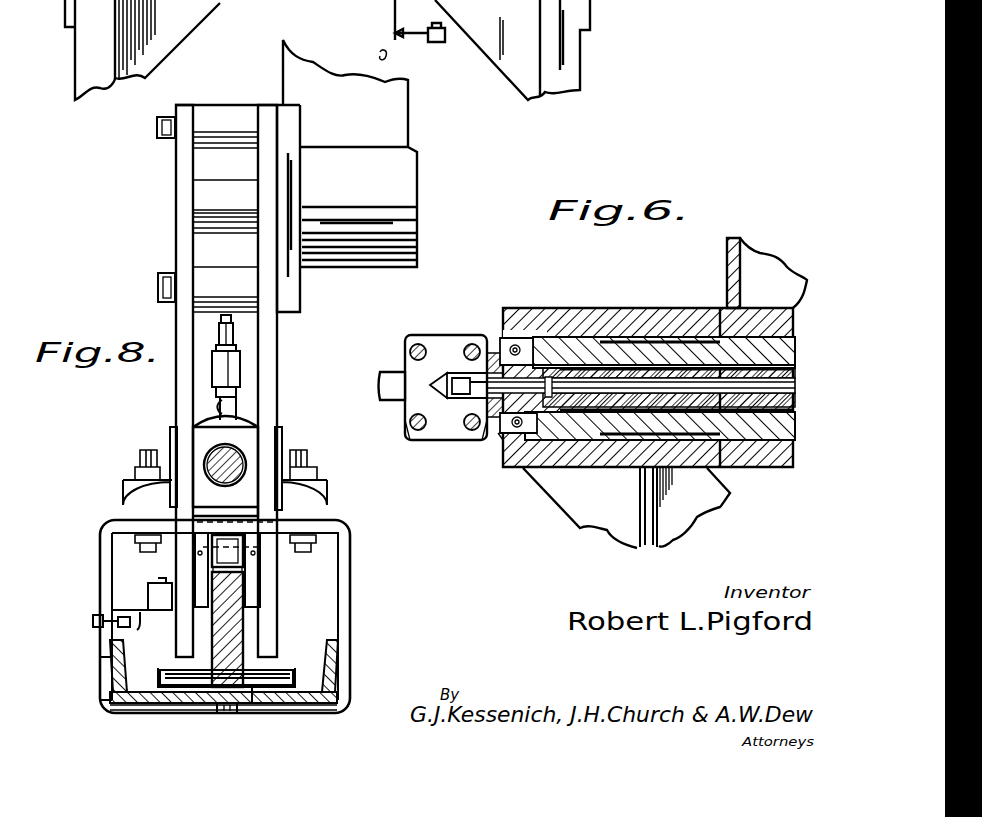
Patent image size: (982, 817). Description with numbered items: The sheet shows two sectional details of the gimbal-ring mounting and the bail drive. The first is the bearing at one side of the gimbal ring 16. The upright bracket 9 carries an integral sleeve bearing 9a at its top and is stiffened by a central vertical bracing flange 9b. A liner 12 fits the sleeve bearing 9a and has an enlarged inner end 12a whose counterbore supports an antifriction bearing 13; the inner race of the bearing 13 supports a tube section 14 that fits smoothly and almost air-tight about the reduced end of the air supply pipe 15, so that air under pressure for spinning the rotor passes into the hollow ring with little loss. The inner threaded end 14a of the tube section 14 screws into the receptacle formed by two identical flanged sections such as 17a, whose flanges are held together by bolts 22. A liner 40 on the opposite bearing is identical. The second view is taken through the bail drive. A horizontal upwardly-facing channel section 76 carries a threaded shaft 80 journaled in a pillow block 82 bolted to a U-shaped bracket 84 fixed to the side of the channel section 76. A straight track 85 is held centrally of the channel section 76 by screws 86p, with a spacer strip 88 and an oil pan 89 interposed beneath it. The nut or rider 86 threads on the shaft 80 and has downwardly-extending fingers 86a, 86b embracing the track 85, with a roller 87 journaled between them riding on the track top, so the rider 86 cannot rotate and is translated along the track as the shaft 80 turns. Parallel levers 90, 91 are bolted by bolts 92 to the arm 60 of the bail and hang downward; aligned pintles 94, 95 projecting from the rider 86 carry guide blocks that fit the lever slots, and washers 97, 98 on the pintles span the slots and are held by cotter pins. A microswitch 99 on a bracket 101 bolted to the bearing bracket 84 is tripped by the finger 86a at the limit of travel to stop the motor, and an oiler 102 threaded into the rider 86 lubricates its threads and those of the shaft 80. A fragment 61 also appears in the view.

In FIG. 6, the upright bracket 9 is at (645, 546).
In FIG. 6, the sleeve bearing 9a is at (611, 318).
In FIG. 6, the vertical bracing flange 9b is at (720, 495).
In FIG. 6, the liner 12 is at (786, 355).
In FIG. 6, the enlarged inner end 12a is at (503, 332).
In FIG. 6, the antifriction bearing 13 is at (506, 436).
In FIG. 6, the tube section 14 is at (556, 406).
In FIG. 6, the inner threaded end 14a is at (450, 378).
In FIG. 6, the air supply pipe 15 is at (793, 385).
In FIG. 6, the gimbal ring 16 is at (403, 427).
In FIG. 6, the flanged section 17a is at (440, 432).
In FIG. 6, the bolts 22 is at (466, 343).
In FIG. 8, the liner 40 is at (218, 190).
In FIG. 8, the arm 60 is at (365, 84).
In FIG. 6, the wall 61 is at (758, 265).
In FIG. 8, the channel section 76 is at (292, 706).
In FIG. 8, the threaded shaft 80 is at (230, 458).
In FIG. 8, the pillow block 82 is at (128, 487).
In FIG. 8, the U-shaped bracket 84 is at (340, 606).
In FIG. 8, the track 85 is at (240, 633).
In FIG. 8, the nut or rider 86 is at (202, 442).
In FIG. 8, the finger 86a is at (200, 572).
In FIG. 8, the finger 86b is at (255, 584).
In FIG. 8, the screws 86p is at (226, 713).
In FIG. 8, the roller 87 is at (229, 538).
In FIG. 8, the spacer strip 88 is at (252, 705).
In FIG. 8, the oil pan 89 is at (280, 680).
In FIG. 8, the lever 90 is at (178, 386).
In FIG. 8, the lever 91 is at (272, 338).
In FIG. 8, the bolts 92 is at (160, 140).
In FIG. 8, the pintle 94 is at (140, 457).
In FIG. 8, the pintle 95 is at (300, 462).
In FIG. 8, the washer 97 is at (172, 430).
In FIG. 8, the washer 98 is at (283, 438).
In FIG. 8, the microswitch 99 is at (148, 598).
In FIG. 8, the bracket 101 is at (132, 626).
In FIG. 8, the oiler 102 is at (240, 376).